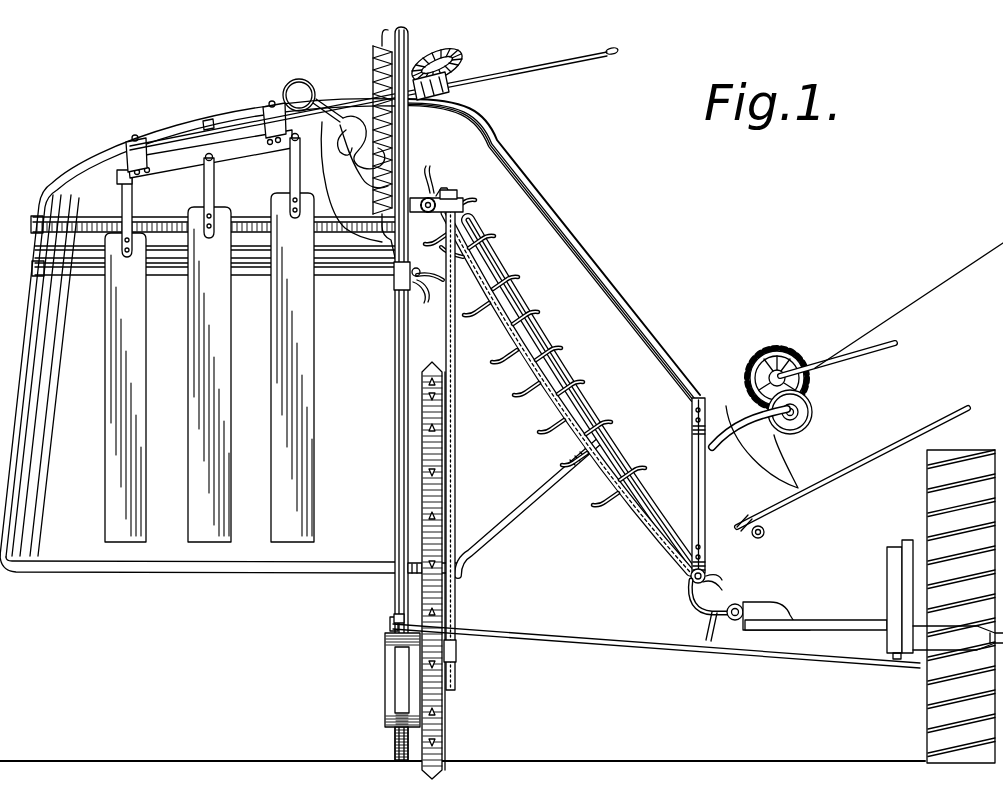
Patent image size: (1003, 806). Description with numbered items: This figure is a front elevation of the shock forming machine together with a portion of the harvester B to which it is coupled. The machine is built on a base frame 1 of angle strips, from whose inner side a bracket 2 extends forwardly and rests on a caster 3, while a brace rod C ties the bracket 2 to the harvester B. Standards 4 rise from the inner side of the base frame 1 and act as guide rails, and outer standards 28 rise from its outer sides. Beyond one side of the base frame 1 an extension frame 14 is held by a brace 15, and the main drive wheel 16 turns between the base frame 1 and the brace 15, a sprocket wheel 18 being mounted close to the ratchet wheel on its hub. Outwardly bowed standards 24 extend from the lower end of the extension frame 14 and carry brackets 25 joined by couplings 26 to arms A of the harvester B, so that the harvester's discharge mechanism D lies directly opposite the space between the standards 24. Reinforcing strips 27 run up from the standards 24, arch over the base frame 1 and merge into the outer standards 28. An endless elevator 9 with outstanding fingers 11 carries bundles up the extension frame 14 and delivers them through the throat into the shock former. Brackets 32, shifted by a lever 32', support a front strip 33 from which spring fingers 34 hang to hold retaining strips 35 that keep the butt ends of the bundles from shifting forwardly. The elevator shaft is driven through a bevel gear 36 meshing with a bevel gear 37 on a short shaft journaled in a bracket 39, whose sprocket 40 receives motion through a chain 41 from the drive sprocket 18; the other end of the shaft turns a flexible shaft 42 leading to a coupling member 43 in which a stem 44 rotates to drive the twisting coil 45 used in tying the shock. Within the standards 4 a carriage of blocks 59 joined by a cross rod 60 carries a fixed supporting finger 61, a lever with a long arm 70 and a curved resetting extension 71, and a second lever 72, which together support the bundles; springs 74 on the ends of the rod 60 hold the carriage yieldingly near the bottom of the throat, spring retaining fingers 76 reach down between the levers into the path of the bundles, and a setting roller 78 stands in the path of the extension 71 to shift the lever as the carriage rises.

The base frame 1 is at (260, 573).
The bracket 2 is at (397, 607).
The caster 3 is at (400, 697).
The standards 4 is at (398, 470).
The endless elevator 9 is at (633, 521).
The outstanding fingers 11 is at (637, 433).
The extension frame 14 is at (593, 393).
The brace 15 is at (520, 522).
The main drive wheel 16 is at (440, 700).
The sprocket wheel 18 is at (456, 656).
The outwardly bowed standards 24 is at (704, 497).
The laterally extending brackets 25 is at (700, 617).
The couplings 26 is at (752, 620).
The reinforcing strips 27 is at (614, 296).
The outer standards 28 is at (24, 450).
The brackets 32 is at (206, 121).
The lever 32' is at (374, 98).
The front strip 33 is at (207, 119).
The depending spring fingers 34 is at (203, 189).
The retaining strips 35 is at (200, 479).
The bevel gear 36 is at (429, 192).
The bevel gear 37 is at (444, 192).
The bracket 39 is at (463, 205).
The sprocket 40 is at (456, 194).
The chain 41 is at (454, 358).
The flexible shaft 42 is at (440, 55).
The coupling member 43 is at (449, 91).
The stem 44 is at (353, 110).
The twisting coil 45 is at (300, 159).
The blocks 59 is at (393, 290).
The cross rod 60 is at (388, 274).
The supporting finger 61 is at (126, 196).
The long arm 70 is at (261, 269).
The resetting extension 71 is at (445, 281).
The lever 72 is at (178, 253).
The springs 74 is at (372, 105).
The spring retaining fingers 76 is at (317, 234).
The setting roller 78 is at (465, 257).
The arms A is at (830, 627).
The harvester B is at (929, 606).
The brace rod C is at (615, 640).
The discharge mechanism D is at (786, 350).